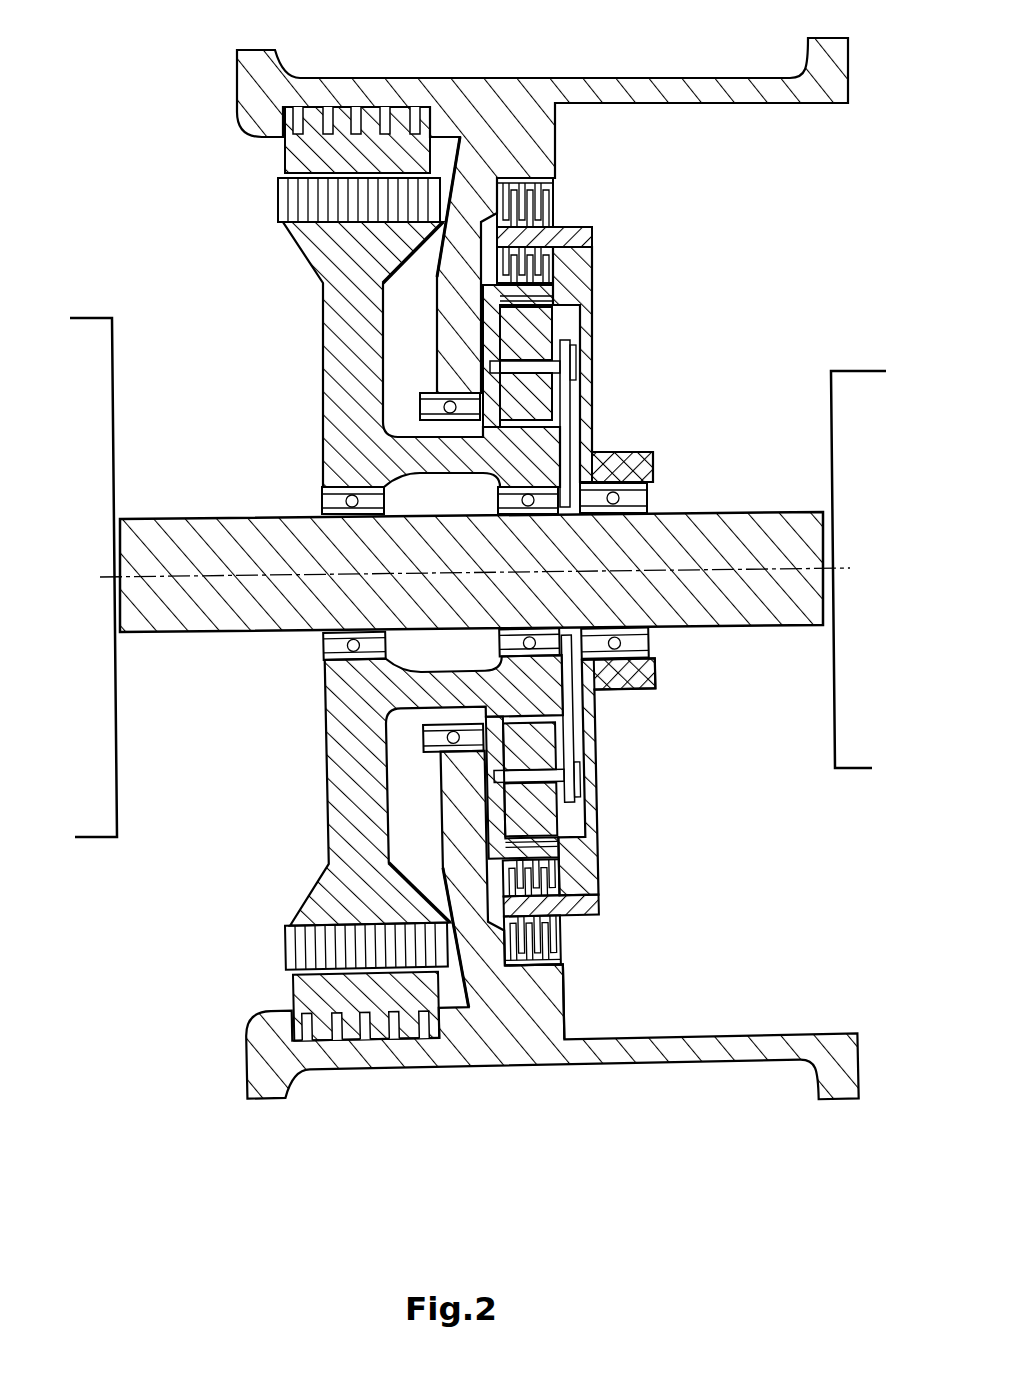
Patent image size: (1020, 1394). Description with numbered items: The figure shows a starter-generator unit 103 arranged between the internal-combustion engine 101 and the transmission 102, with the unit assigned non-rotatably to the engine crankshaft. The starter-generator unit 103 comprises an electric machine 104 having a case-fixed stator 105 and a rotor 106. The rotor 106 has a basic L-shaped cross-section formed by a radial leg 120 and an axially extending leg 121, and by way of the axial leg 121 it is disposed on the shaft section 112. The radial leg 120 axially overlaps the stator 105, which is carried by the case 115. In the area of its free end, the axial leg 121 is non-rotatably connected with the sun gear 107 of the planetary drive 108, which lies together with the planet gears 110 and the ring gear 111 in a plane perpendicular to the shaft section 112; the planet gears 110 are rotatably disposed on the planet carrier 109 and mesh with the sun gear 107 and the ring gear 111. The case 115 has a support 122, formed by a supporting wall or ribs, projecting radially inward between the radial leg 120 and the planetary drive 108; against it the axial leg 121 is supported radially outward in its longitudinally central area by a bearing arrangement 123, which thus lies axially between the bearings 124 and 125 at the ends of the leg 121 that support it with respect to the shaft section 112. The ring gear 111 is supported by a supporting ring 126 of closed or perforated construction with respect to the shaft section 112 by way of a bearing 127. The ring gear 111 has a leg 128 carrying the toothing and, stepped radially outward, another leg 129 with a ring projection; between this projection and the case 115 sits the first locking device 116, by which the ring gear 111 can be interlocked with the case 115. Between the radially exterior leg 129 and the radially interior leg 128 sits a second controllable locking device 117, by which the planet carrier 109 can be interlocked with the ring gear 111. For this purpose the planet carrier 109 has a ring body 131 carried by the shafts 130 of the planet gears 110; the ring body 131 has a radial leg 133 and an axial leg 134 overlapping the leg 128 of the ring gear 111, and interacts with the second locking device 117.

The internal-combustion engine 101 is at (80, 513).
The transmission 102 is at (914, 502).
The starter-generator unit 103 is at (312, 1102).
The electric machine 104 is at (375, 117).
The stator 105 is at (292, 157).
The rotor 106 is at (307, 360).
The sun gear 107 is at (593, 702).
The planetary drive 108 is at (637, 972).
The planet carrier 109 is at (570, 733).
The planet gears 110 is at (583, 327).
The ring gear 111 is at (550, 330).
The shaft section 112 is at (218, 613).
The case 115 is at (512, 92).
The first locking device 116 is at (552, 204).
The second controllable locking device 117 is at (552, 262).
The radial leg 120 is at (336, 752).
The axially extending leg 121 is at (450, 688).
The support 122 is at (487, 826).
The bearing arrangement 123 is at (575, 760).
The bearing 124 is at (327, 498).
The bearing 125 is at (556, 478).
The supporting ring 126 is at (597, 813).
The bearing 127 is at (628, 497).
The leg of ring gear 128 is at (545, 845).
The another leg of ring gear 129 is at (543, 910).
The shafts of planet gears 130 is at (560, 395).
The ring body 131 is at (445, 808).
The radial leg of ring body 133 is at (490, 320).
The axial leg of ring body 134 is at (549, 302).